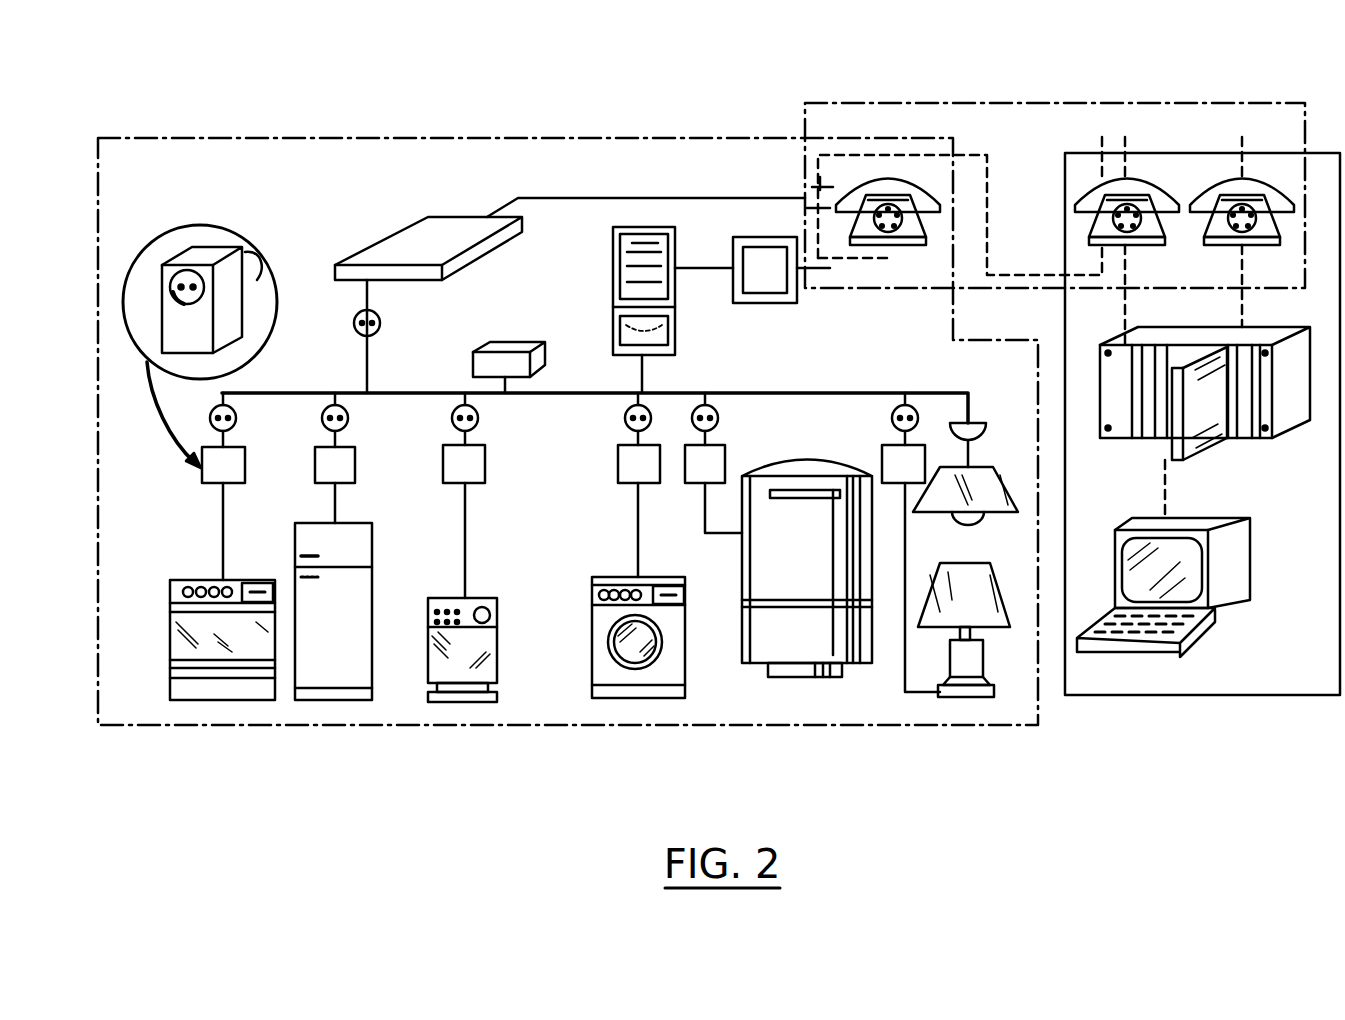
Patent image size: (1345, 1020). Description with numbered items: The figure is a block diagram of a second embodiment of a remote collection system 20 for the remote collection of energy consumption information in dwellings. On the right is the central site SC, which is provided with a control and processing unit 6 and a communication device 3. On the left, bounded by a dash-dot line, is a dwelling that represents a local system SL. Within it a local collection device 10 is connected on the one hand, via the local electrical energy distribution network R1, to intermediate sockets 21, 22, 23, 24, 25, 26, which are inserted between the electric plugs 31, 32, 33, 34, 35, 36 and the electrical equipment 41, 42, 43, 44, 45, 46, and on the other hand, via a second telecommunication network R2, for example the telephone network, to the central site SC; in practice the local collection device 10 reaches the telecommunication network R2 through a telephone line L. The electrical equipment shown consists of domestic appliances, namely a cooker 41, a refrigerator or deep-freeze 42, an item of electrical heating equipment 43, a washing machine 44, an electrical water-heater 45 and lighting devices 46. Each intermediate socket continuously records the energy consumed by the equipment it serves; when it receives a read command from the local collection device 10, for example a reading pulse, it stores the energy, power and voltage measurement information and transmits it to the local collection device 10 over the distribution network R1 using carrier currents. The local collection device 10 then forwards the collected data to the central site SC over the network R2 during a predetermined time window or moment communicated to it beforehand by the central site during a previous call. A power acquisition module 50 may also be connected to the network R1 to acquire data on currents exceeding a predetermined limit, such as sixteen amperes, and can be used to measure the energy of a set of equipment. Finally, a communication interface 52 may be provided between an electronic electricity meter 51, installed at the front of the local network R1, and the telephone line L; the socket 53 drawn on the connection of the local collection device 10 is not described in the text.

The communication device 3 is at (1290, 440).
The control and processing unit 6 is at (1252, 558).
The local collection device 10 is at (386, 237).
The remote collection system 20 is at (640, 745).
The intermediate socket 21 is at (193, 226).
The intermediate socket 22 is at (355, 462).
The intermediate socket 23 is at (486, 462).
The intermediate socket 24 is at (617, 472).
The intermediate socket 25 is at (690, 485).
The intermediate socket 26 is at (928, 444).
The electric plug 31 is at (236, 421).
The electric plug 32 is at (349, 418).
The electric plug 33 is at (479, 418).
The electric plug 34 is at (625, 423).
The electric plug 35 is at (719, 418).
The electric plug 36 is at (893, 421).
The cooker 41 is at (210, 700).
The refrigerator or deep-freeze 42 is at (310, 700).
The electrical heating equipment 43 is at (457, 702).
The washing machine 44 is at (615, 698).
The electrical water-heater 45 is at (797, 677).
The lighting devices 46 is at (955, 700).
The power acquisition module 50 is at (515, 343).
The electronic electricity meter 51 is at (677, 296).
The communication interface 52 is at (797, 293).
The socket outlet of central unit 53 is at (382, 323).
The local system SL is at (642, 134).
The local electrical energy distribution network R1 is at (746, 388).
The second telecommunication network R2 is at (1195, 99).
The telephone line L is at (988, 199).
The central site SC is at (1166, 702).